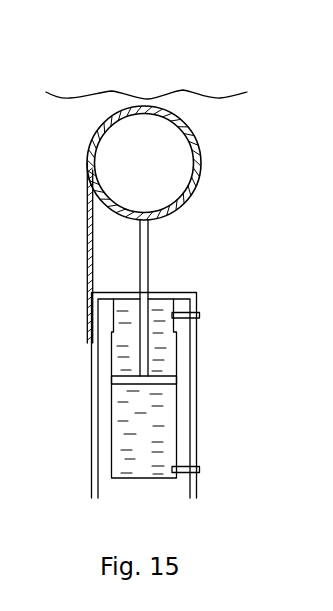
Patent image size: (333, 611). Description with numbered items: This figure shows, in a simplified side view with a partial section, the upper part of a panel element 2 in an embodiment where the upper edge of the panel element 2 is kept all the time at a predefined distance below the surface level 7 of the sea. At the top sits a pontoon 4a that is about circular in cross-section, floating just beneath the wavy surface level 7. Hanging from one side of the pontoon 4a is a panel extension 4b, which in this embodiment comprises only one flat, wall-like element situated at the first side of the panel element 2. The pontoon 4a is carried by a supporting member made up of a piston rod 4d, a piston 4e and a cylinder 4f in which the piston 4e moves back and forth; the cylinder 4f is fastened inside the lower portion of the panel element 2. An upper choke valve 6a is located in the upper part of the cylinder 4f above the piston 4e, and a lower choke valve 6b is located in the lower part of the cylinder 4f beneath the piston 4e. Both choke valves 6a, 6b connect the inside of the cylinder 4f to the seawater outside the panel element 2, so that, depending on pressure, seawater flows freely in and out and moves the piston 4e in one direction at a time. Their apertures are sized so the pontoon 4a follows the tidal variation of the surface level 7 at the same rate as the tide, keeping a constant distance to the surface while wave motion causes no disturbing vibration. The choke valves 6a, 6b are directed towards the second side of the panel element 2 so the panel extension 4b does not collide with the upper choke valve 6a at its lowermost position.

The surface level 7 is at (80, 95).
The pontoon 4a is at (200, 163).
The panel extension 4b is at (88, 242).
The piston rod 4d is at (150, 255).
The panel element 2 is at (93, 366).
The upper choke valve 6a is at (200, 313).
The lower choke valve 6b is at (200, 468).
The piston 4e is at (178, 380).
The cylinder 4f is at (115, 466).